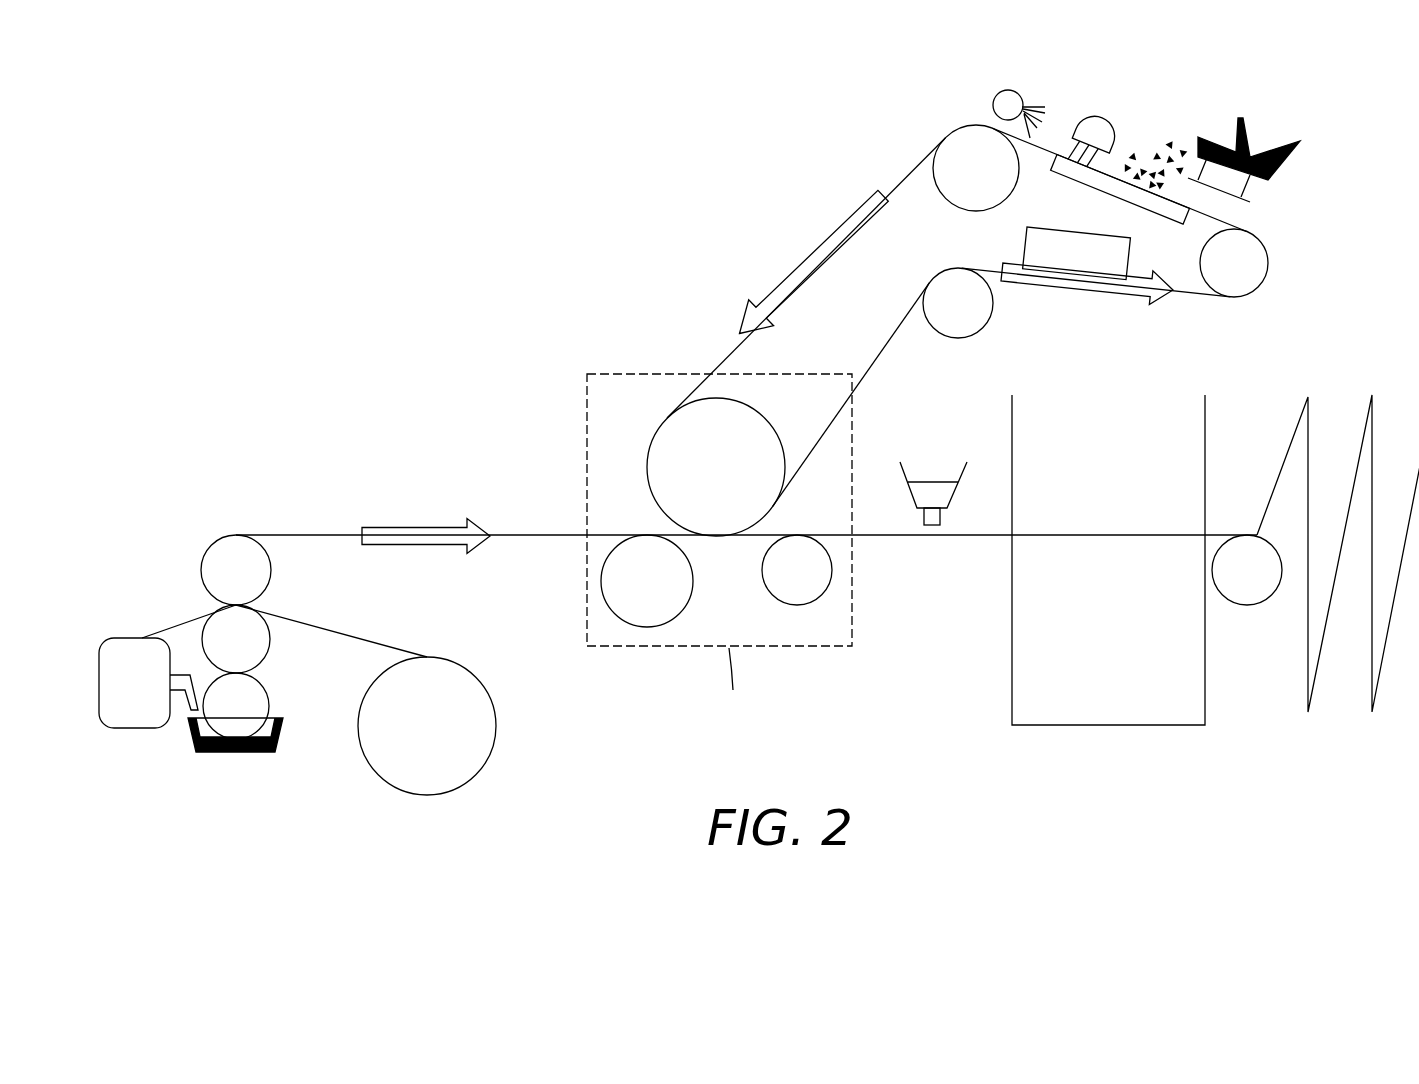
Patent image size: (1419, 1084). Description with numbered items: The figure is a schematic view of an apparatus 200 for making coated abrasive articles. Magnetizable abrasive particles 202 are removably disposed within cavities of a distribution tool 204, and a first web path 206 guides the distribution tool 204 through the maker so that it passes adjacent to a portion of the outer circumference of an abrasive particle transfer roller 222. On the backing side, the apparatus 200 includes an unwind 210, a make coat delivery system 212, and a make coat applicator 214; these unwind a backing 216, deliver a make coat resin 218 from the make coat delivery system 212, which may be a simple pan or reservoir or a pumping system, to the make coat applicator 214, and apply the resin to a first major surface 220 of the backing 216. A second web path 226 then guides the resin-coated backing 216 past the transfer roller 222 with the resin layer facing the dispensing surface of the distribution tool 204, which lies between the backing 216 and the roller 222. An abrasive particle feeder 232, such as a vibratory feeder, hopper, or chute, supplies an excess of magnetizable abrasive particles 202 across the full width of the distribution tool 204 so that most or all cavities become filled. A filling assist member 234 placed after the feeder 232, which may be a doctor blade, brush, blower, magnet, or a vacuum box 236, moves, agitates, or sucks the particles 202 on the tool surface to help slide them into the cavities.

The apparatus 200 is at (405, 303).
The magnetizable abrasive particles 202 is at (1140, 142).
The distribution tool 204 is at (685, 527).
The first web path 206 is at (817, 255).
The unwind 210 is at (423, 785).
The make coat delivery system 212 is at (135, 720).
The make coat applicator 214 is at (235, 552).
The backing 216 is at (391, 645).
The make coat resin 218 is at (262, 751).
The first major surface 220 is at (511, 516).
The abrasive particle transfer roller 222 is at (692, 437).
The second web path 226 is at (418, 527).
The abrasive particle feeder 232 is at (1264, 147).
The filling assist member 234 is at (1088, 130).
The vacuum box 236 is at (1128, 197).